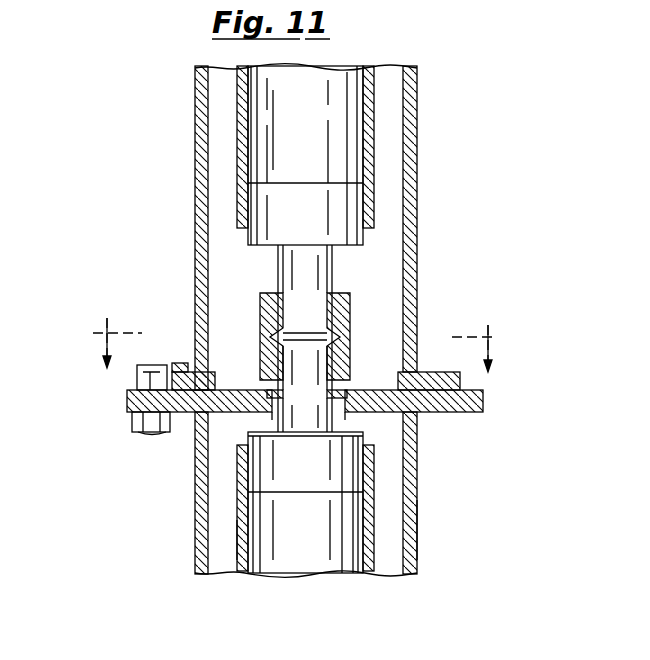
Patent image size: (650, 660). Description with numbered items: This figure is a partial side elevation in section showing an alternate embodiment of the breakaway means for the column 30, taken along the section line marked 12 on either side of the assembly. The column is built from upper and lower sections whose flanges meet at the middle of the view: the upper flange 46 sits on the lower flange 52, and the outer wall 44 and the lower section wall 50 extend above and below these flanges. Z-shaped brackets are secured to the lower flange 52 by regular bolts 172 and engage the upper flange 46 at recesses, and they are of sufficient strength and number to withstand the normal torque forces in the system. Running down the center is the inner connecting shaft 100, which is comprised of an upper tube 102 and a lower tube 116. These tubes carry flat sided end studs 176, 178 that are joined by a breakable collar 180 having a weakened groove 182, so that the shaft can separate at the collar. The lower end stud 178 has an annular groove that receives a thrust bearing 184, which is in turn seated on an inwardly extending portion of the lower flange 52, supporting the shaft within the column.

The column 30 is at (420, 66).
The outer tube 44 is at (418, 163).
The upper tube 102 is at (375, 128).
The end stud 176 is at (332, 274).
The breakable collar 180 is at (262, 293).
The weakened groove 182 is at (278, 335).
The thrust bearing 184 is at (270, 392).
The bolts 172 is at (148, 365).
The lower end stud 178 is at (275, 423).
The lower flange 52 is at (460, 412).
The upper flange 46 is at (440, 372).
The lower tube 116 is at (374, 557).
The lower tube 50 is at (417, 498).
The inner connecting shaft 100 is at (240, 518).
The section line 12- 12 is at (299, 339).